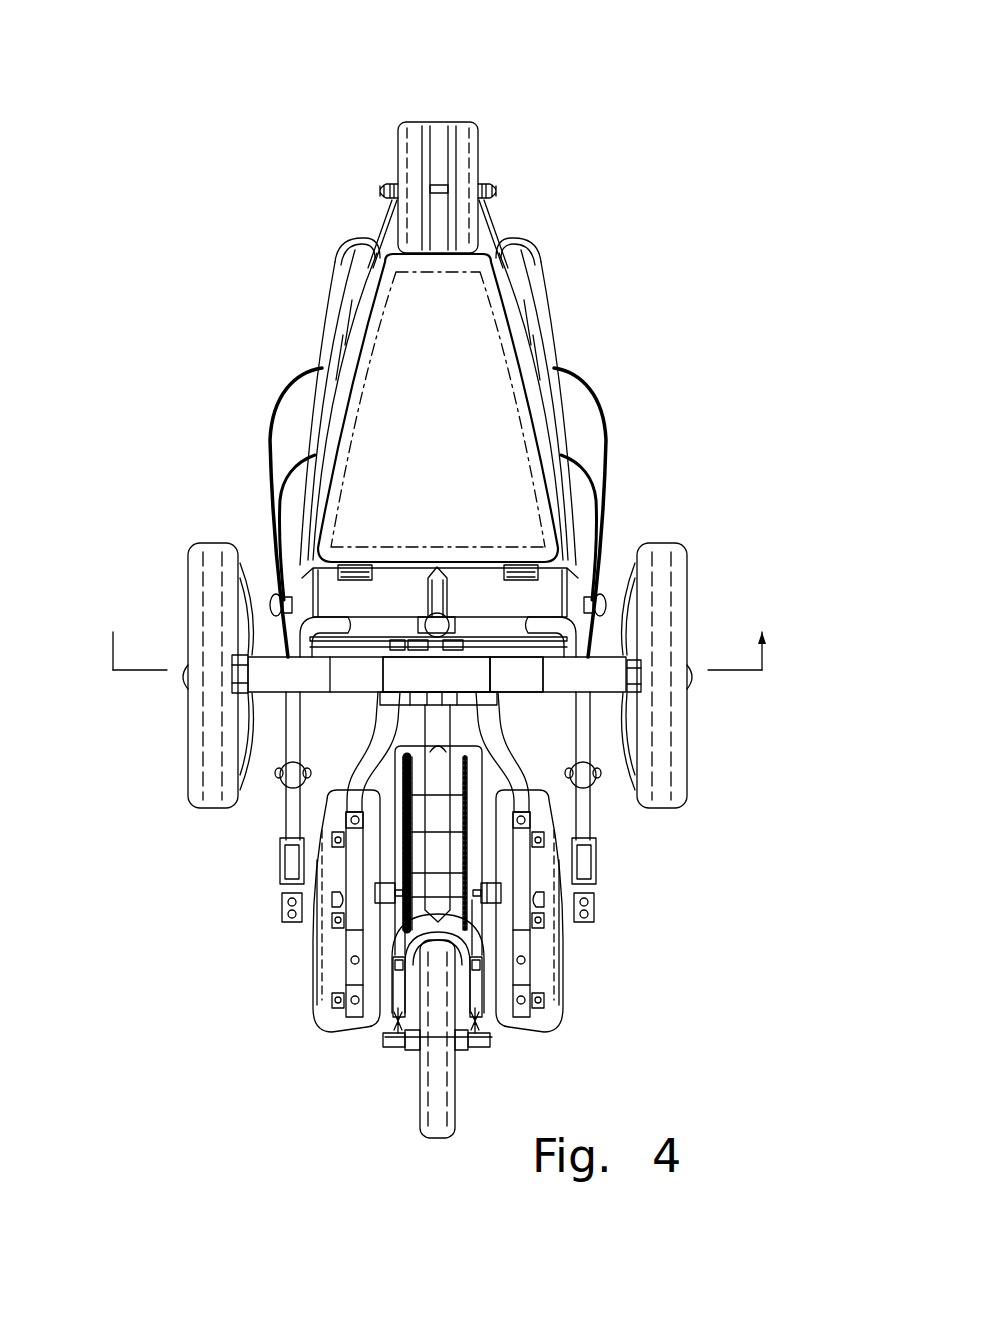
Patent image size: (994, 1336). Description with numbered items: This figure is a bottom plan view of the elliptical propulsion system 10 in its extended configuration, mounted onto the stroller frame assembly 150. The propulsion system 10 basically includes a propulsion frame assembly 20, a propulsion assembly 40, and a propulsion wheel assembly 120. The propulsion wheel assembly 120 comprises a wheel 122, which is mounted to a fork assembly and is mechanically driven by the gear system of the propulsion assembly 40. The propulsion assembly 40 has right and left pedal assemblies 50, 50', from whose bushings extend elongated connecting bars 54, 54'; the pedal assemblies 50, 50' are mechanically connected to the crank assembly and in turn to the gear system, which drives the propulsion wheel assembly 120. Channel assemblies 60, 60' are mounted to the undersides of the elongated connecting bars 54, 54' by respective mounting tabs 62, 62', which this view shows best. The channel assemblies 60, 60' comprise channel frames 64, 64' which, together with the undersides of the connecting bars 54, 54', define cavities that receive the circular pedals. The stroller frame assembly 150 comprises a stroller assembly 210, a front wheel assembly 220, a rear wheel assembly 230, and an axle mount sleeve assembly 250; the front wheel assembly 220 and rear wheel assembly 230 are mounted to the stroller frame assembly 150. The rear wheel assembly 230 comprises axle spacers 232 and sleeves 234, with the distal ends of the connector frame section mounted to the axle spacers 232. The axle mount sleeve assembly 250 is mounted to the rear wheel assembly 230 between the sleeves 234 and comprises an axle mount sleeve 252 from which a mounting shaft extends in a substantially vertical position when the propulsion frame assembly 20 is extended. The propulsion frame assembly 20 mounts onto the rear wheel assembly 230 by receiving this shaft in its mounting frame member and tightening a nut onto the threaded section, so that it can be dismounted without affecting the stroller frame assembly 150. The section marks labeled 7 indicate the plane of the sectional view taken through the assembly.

The elliptical propulsion system 10 is at (742, 887).
The propulsion frame assembly 20 is at (427, 735).
The propulsion assembly 40 is at (360, 1074).
The right pedal assembly 50 is at (324, 952).
The left pedal assembly 50' is at (570, 943).
The elongated connecting bar 54 is at (216, 807).
The elongated connecting bar 54' is at (628, 807).
The channel assembly 60 is at (305, 914).
The channel assembly 60' is at (569, 914).
The mounting tab 62 is at (312, 983).
The mounting tab 62' is at (598, 986).
The channel frame 64 is at (305, 926).
The channel frame 64' is at (598, 932).
The propulsion wheel assembly 120 is at (407, 1140).
The wheel 122 is at (437, 1138).
The stroller frame assembly 150 is at (592, 542).
The stroller assembly 210 is at (552, 263).
The front wheel assembly 220 is at (472, 116).
The rear wheel assembly 230 is at (215, 528).
The axle spacer 232 is at (587, 673).
The sleeve 234 is at (513, 675).
The axle mount sleeve assembly 250 is at (270, 696).
The axle mount sleeve 252 is at (390, 680).
The section line 7- 7 is at (440, 635).